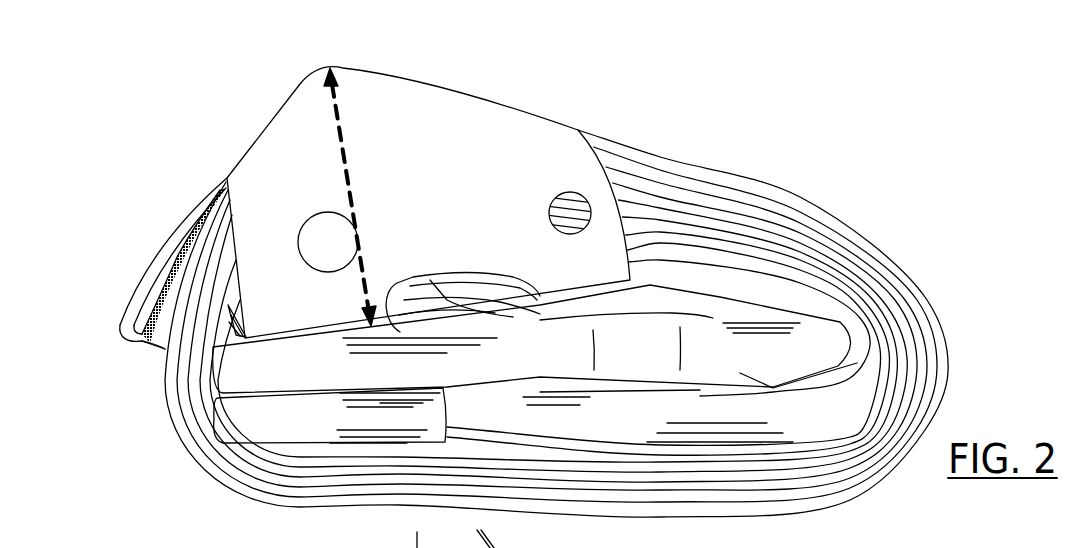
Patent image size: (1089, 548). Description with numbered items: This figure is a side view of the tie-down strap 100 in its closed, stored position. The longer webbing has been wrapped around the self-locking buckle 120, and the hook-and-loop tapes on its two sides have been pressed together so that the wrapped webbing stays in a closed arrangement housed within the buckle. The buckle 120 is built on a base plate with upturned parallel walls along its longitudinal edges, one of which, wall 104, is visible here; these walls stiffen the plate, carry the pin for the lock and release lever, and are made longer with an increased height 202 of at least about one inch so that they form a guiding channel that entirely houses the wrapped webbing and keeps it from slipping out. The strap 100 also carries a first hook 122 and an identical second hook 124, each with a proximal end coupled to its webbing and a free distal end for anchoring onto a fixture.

The tie-down strap 100 is at (589, 292).
The upturned parallel wall 104 is at (508, 240).
The self-locking buckle 120 is at (537, 105).
The first hook 122 is at (281, 380).
The second hook 124 is at (290, 430).
The increased height 202 is at (345, 178).